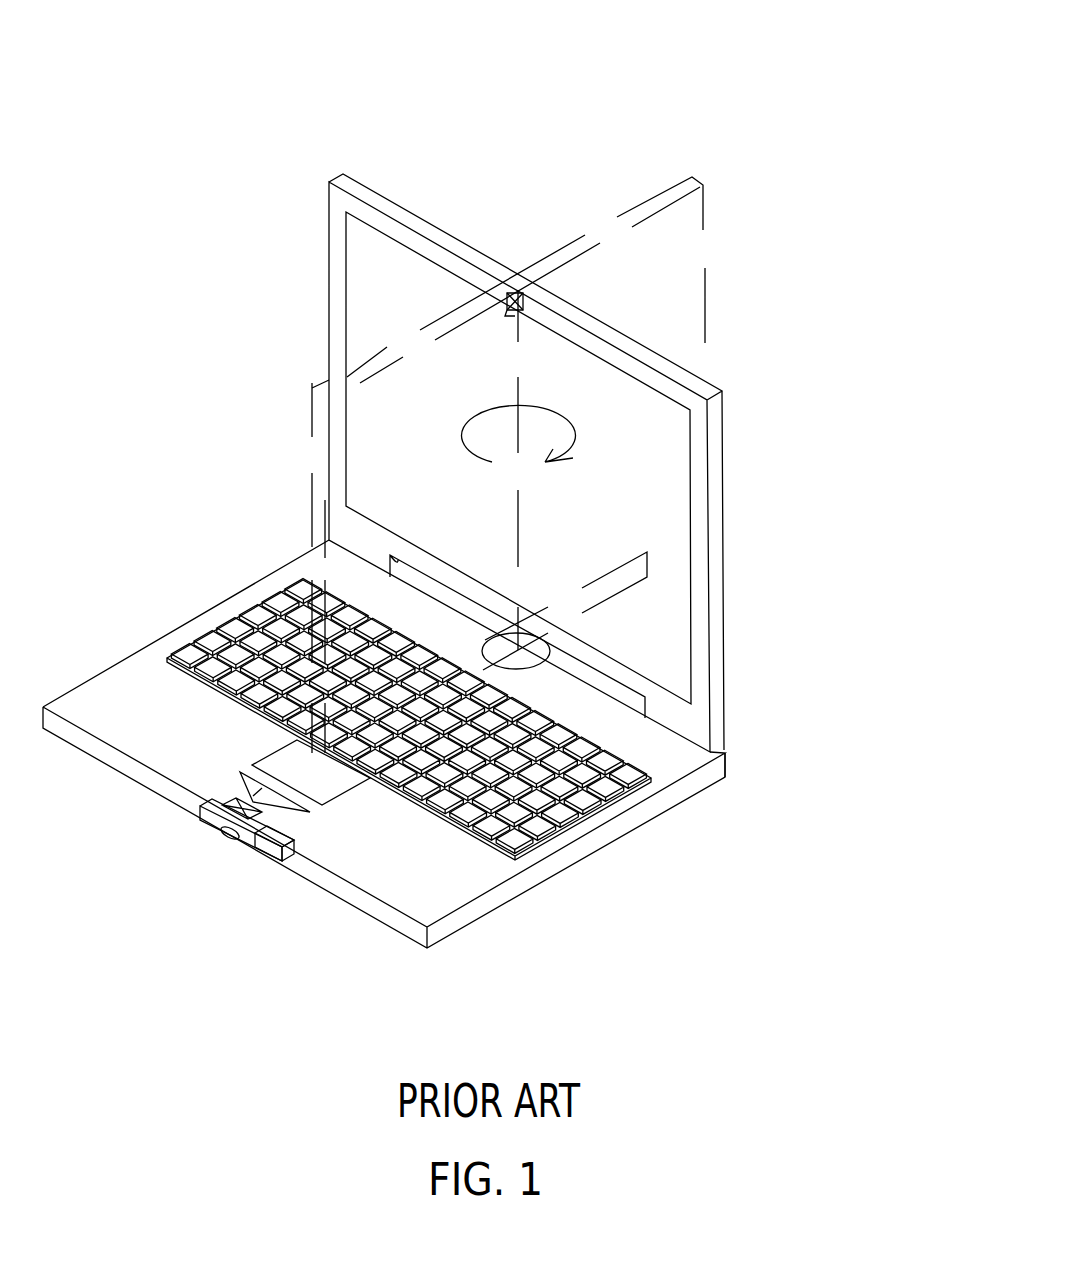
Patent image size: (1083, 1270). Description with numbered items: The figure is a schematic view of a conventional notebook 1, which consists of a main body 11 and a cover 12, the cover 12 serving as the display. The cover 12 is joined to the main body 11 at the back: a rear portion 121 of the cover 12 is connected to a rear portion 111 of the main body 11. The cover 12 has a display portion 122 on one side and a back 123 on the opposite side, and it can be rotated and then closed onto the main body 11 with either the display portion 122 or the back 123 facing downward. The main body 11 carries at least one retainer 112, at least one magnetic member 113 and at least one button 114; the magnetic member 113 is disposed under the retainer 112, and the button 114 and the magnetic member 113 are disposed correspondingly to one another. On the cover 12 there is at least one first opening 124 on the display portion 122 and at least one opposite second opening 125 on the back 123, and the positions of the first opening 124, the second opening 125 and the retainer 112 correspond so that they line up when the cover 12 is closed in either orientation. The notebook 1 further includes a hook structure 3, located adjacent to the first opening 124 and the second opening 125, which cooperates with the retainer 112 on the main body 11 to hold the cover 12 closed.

The notebook 1 is at (893, 36).
The main body 11 is at (557, 913).
The rear portion of the main body 111 is at (725, 765).
The retainer 112 is at (217, 807).
The magnetic member 113 is at (263, 855).
The button 114 is at (233, 843).
The cover 12 is at (765, 564).
The rear portion of the cover 121 is at (725, 738).
The display portion 122 is at (363, 293).
The back of the cover 123 is at (662, 227).
The first opening 124 is at (522, 307).
The second opening 125 is at (522, 312).
The hook structure 3 is at (513, 307).